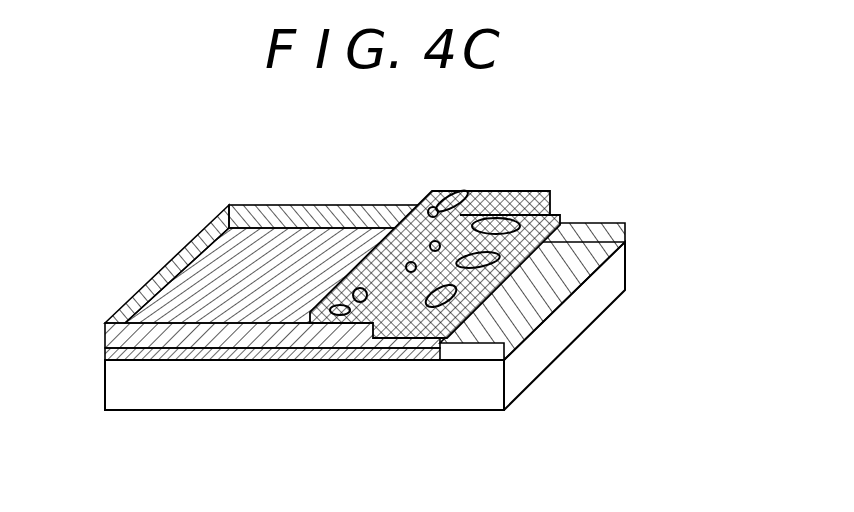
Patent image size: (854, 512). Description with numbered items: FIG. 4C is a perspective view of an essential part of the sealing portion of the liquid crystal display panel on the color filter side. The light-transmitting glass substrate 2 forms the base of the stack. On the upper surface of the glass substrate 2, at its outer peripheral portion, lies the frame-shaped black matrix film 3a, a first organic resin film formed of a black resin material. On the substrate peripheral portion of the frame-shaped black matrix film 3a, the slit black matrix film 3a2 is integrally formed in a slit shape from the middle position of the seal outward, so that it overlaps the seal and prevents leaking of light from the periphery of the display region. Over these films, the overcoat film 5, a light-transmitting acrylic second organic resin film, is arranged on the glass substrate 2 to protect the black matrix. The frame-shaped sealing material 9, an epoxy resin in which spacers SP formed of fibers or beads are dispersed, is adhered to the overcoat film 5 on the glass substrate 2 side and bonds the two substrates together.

The glass substrate 2 is at (450, 393).
The frame-shaped black matrix film 3a is at (258, 360).
The slit black matrix film 3a2 is at (515, 275).
The overcoat film 5 is at (283, 204).
The sealing material 9 is at (435, 223).
The spacers SP is at (447, 192).